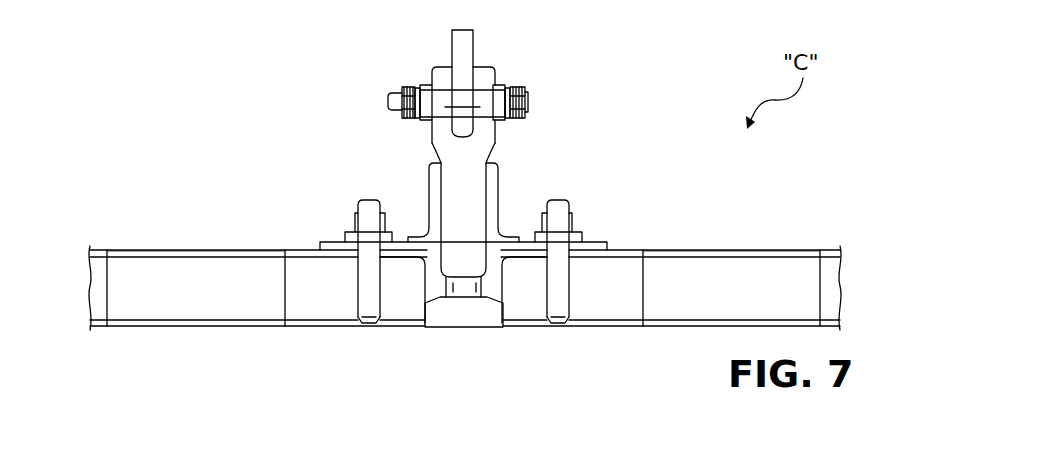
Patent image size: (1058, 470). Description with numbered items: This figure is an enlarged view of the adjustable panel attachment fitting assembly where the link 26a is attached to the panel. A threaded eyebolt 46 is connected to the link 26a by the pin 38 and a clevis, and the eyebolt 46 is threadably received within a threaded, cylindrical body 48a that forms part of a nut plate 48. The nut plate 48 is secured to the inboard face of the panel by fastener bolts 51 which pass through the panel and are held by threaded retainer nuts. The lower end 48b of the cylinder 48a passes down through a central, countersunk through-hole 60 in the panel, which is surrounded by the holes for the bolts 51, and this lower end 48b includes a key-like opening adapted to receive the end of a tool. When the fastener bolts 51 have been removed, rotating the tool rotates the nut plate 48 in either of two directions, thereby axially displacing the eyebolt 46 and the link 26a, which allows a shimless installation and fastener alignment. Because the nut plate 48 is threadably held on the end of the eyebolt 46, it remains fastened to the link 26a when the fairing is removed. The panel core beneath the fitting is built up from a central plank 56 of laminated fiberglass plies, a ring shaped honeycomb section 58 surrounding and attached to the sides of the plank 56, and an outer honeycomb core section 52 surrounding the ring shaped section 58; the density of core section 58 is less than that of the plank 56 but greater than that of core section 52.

The link 26a is at (467, 43).
The pin 38 is at (443, 96).
The threaded eyebolt 46 is at (473, 188).
The nut plate 48 is at (322, 248).
The threaded cylindrical body 48a is at (438, 193).
The lower end of the cylinder 48b is at (490, 289).
The fastener bolts 51 is at (372, 296).
The honeycomb core section 52 is at (95, 272).
The plank 56 is at (620, 286).
The ring shaped honeycomb section 58 is at (165, 288).
The central countersunk through-hole 60 is at (434, 306).